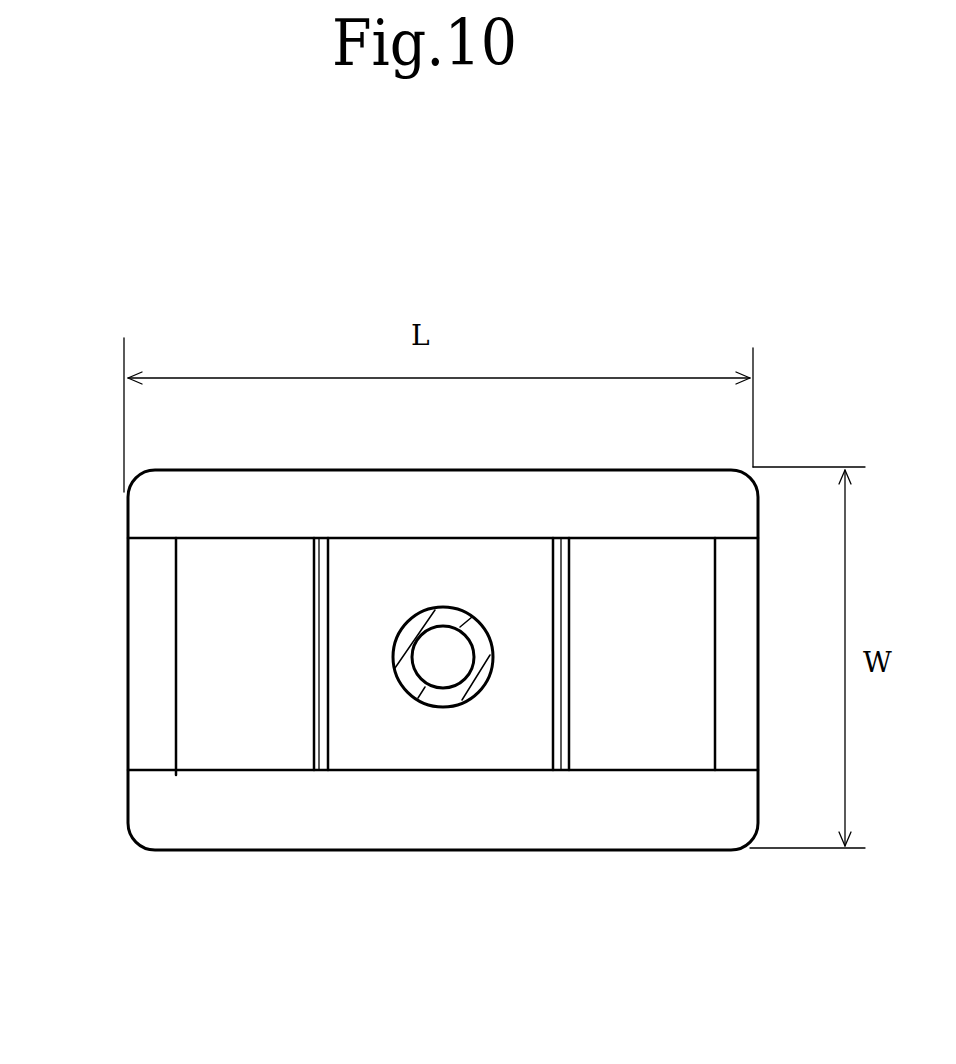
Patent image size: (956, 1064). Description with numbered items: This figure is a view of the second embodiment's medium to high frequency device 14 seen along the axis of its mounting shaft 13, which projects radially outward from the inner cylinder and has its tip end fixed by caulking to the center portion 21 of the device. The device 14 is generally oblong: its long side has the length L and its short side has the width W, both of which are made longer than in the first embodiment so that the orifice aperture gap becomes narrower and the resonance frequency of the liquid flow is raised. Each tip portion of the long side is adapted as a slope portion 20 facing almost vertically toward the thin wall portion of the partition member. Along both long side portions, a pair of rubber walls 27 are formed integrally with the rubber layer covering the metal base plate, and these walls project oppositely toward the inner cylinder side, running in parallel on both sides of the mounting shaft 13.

The mounting shaft 13 is at (413, 628).
The medium to high frequency device 14 is at (318, 862).
The slope portion 20 is at (200, 690).
The center portion 21 is at (455, 563).
The rubber wall 27 is at (317, 513).